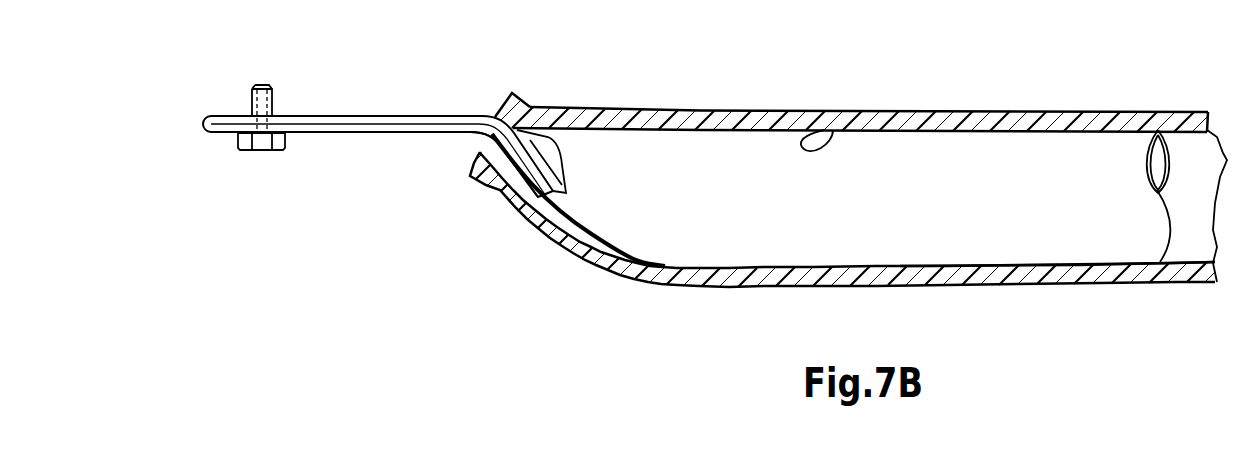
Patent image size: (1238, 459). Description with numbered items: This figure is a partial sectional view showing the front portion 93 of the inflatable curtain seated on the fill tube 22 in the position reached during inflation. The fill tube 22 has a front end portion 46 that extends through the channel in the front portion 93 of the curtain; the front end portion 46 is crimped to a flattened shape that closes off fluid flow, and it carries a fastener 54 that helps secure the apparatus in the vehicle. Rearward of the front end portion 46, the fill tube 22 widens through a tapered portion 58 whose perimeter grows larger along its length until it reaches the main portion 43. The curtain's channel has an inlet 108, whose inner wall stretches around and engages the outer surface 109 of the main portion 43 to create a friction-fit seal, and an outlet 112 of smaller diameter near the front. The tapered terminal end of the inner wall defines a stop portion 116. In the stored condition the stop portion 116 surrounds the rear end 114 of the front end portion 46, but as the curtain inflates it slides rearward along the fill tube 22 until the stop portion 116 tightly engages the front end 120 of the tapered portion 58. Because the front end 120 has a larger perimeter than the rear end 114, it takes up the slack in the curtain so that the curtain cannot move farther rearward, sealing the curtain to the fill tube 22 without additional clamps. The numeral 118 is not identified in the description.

The fill tube 22 is at (1105, 243).
The main portion 43 is at (990, 230).
The front end portion 46 is at (203, 124).
The fastener 54 is at (262, 143).
The tapered portion 58 is at (635, 148).
The front portion 93 is at (953, 107).
The inlet 108 is at (833, 130).
The outer surface 109 is at (1132, 117).
The outlet 112 is at (485, 107).
The rear end 114 is at (462, 140).
The stop portion 116 is at (508, 108).
The lower tube wall 118 is at (672, 247).
The front end 120 is at (518, 127).